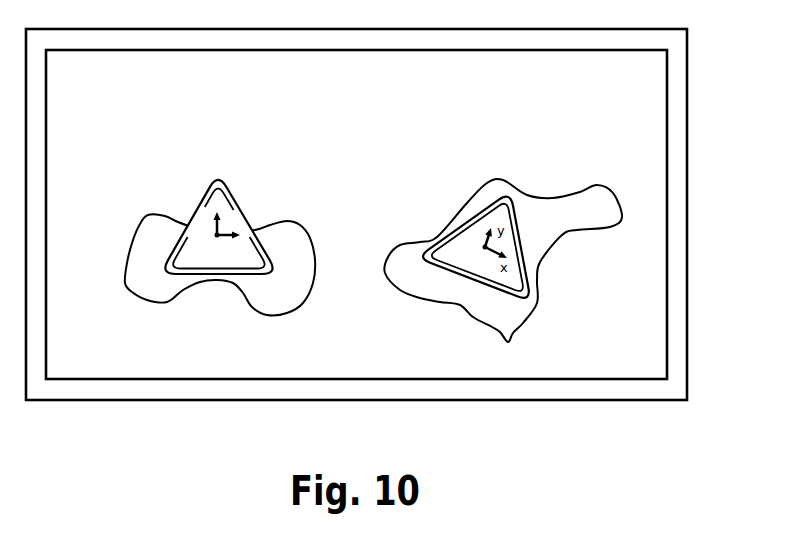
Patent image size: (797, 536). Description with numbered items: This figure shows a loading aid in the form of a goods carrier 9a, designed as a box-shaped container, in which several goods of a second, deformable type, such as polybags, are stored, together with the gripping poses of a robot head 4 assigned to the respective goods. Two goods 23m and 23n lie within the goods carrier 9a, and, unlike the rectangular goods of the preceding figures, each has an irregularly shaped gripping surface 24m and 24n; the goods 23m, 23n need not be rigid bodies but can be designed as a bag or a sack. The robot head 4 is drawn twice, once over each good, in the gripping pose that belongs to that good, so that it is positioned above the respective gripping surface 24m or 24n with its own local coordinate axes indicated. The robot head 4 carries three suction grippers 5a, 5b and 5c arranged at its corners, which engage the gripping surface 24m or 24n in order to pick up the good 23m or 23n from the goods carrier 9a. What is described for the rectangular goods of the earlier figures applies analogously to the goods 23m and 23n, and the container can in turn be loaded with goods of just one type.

The goods carrier 9a is at (675, 95).
The goods 23m is at (136, 219).
The gripping surface 24m is at (170, 227).
The goods 23n is at (558, 184).
The gripping surface 24n is at (532, 237).
The robot head 4 is at (237, 220).
The suction gripper 5a is at (219, 178).
The suction gripper 5b is at (260, 265).
The suction gripper 5c is at (168, 272).